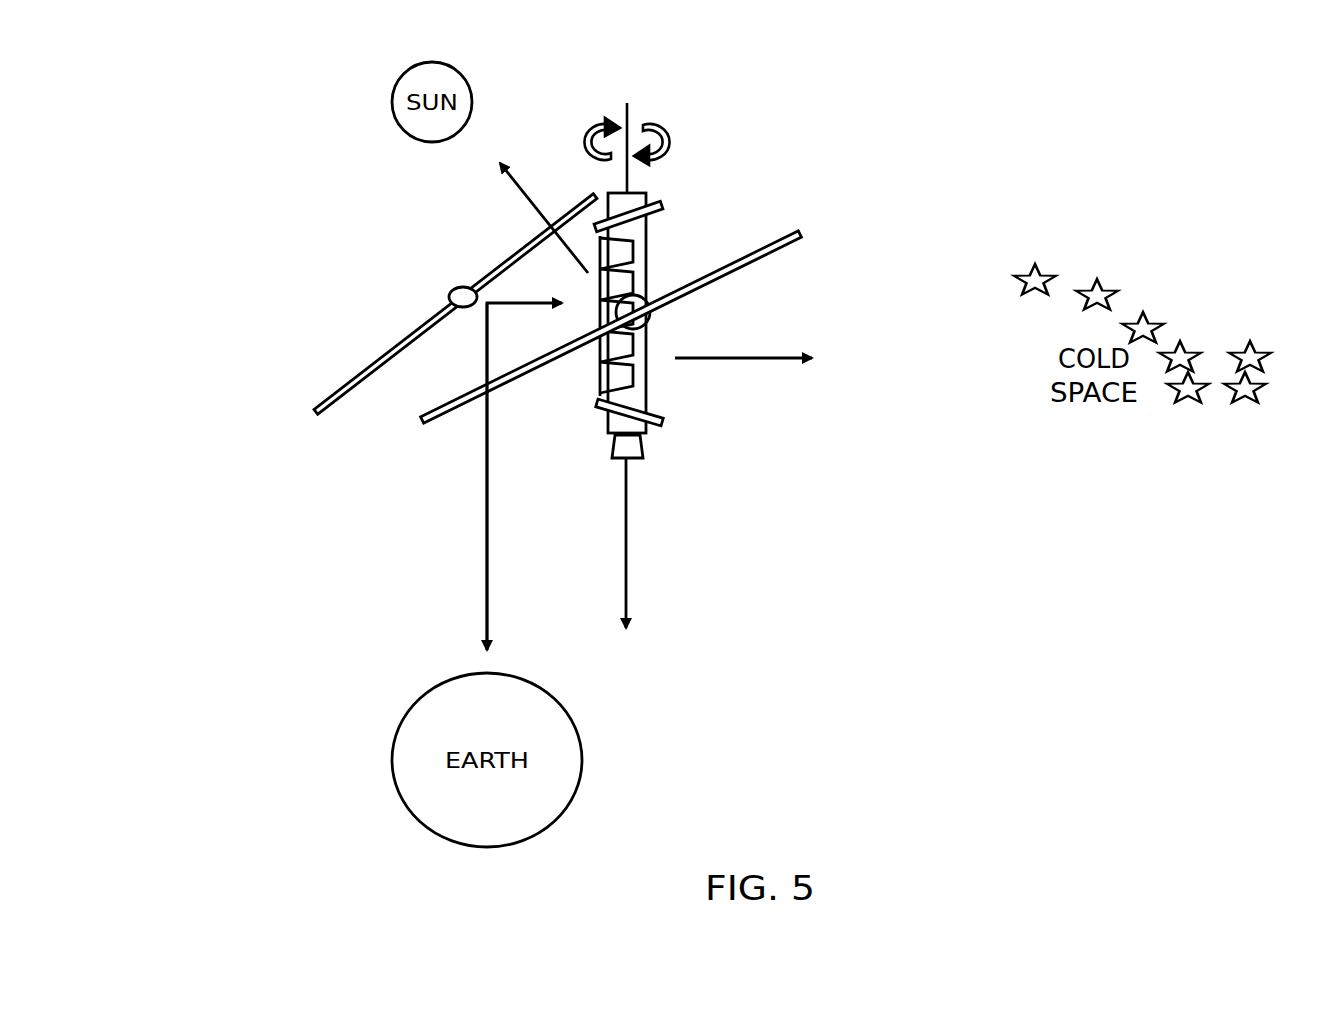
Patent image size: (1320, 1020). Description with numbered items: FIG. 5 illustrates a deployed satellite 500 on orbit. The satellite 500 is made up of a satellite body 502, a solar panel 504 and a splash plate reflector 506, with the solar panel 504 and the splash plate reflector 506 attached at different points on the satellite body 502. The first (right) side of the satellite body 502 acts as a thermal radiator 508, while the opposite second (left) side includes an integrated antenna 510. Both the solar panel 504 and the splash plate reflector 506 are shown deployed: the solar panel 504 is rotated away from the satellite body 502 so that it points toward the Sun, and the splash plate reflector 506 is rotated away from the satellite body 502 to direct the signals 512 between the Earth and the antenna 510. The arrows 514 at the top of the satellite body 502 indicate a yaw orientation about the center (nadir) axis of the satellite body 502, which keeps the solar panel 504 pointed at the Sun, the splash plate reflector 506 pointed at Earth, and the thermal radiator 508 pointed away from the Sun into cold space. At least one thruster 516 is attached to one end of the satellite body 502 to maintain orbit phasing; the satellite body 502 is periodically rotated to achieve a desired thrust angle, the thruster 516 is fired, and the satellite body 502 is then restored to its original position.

The satellite 500 is at (758, 138).
The satellite body 502 is at (647, 272).
The solar panel 504 is at (805, 243).
The splash plate reflector 506 is at (340, 388).
The thermal radiator 508 is at (646, 385).
The antenna 510 is at (600, 385).
The signals 512 is at (465, 476).
The arrows 514 is at (582, 110).
The thruster 516 is at (643, 452).